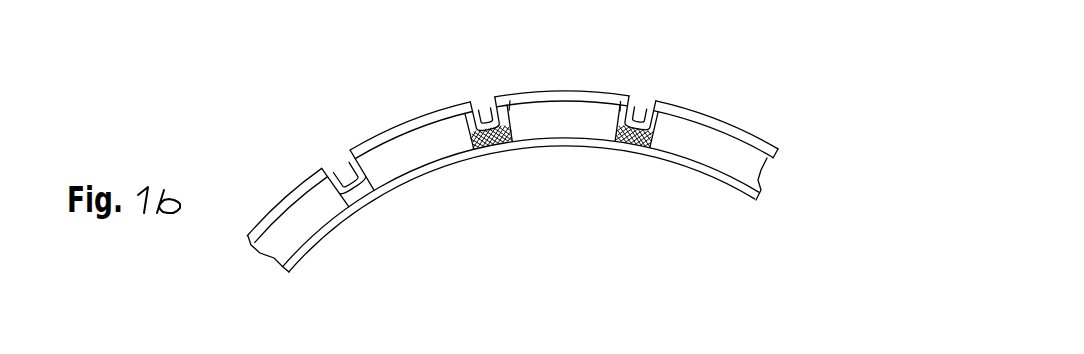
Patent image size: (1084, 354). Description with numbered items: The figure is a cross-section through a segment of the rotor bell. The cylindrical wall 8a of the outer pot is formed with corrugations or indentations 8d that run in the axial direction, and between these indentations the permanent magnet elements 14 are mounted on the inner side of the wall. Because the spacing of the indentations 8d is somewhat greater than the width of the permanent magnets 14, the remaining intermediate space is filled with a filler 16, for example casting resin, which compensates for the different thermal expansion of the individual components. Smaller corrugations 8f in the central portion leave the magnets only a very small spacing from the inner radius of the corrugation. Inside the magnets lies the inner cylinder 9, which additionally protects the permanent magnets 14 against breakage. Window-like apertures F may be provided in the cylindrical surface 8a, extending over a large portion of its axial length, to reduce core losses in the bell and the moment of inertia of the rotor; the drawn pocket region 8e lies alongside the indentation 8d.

The cylindrical wall 8a is at (724, 128).
The corrugations 8f is at (483, 110).
The indentations 8d is at (650, 107).
The filler in groove 8e is at (642, 140).
The permanent magnet elements 14 is at (349, 318).
The inner cylinder 9 is at (343, 225).
The filler 16 is at (487, 143).
The apertures F is at (573, 98).